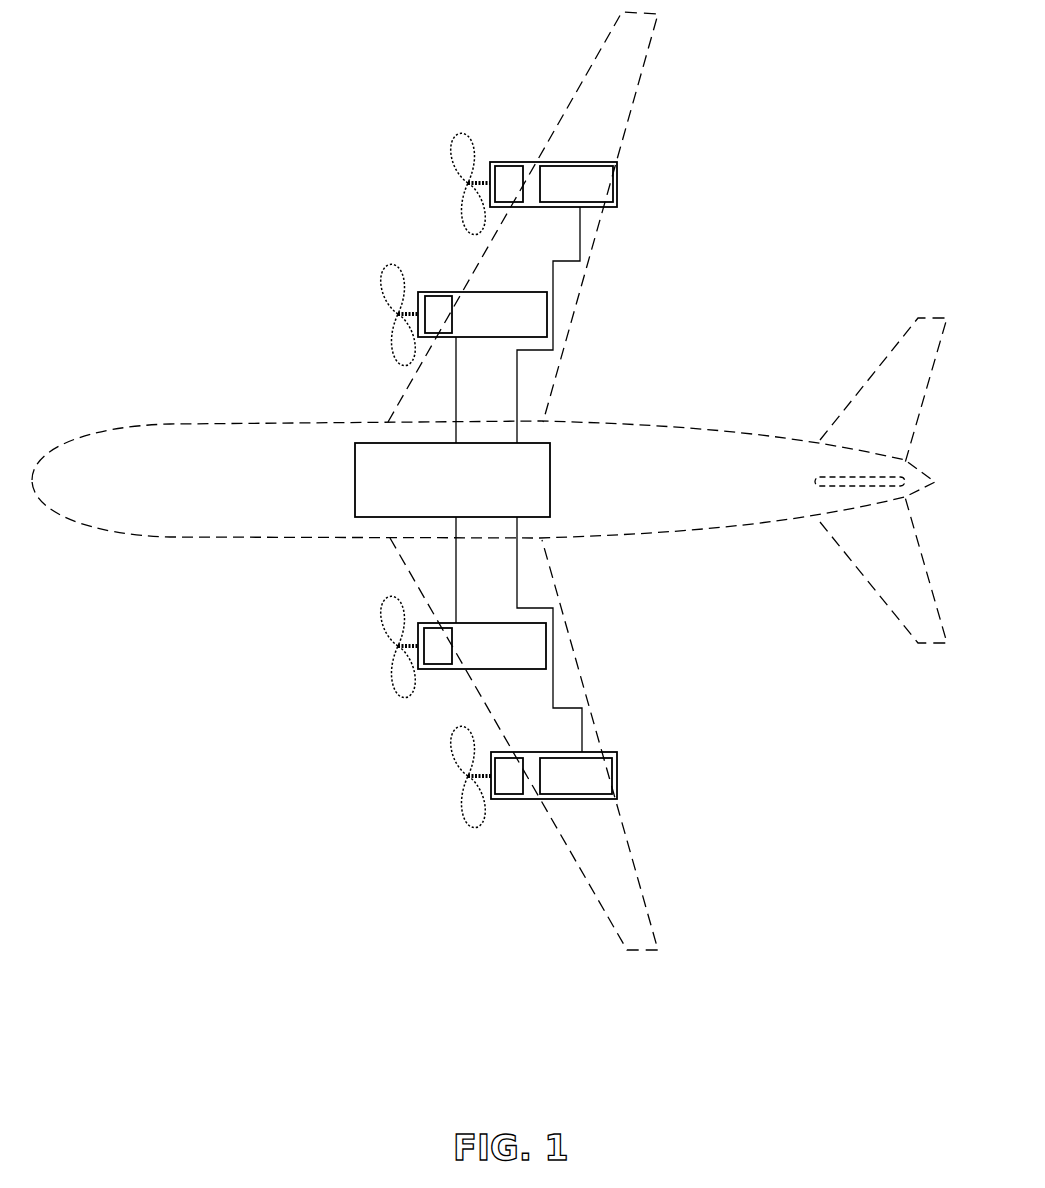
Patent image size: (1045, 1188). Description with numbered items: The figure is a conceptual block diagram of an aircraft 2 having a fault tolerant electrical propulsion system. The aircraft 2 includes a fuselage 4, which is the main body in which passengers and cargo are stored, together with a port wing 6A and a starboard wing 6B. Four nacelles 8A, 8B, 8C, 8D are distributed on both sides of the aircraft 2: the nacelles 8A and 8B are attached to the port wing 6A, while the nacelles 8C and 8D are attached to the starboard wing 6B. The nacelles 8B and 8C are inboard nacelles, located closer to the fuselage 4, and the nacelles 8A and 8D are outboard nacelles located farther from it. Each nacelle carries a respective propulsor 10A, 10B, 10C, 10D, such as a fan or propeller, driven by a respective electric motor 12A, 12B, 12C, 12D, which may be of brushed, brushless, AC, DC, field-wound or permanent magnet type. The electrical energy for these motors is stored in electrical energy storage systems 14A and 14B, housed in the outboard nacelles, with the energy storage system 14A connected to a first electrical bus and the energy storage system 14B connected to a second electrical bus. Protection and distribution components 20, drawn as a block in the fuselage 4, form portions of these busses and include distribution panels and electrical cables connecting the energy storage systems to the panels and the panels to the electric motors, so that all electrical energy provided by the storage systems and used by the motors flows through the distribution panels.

The aircraft 2 is at (845, 77).
The fuselage 4 is at (193, 437).
The port wing 6A is at (623, 860).
The starboard wing 6B is at (645, 55).
The nacelle 8A is at (425, 792).
The nacelle 8B is at (364, 664).
The nacelle 8C is at (366, 309).
The nacelle 8D is at (424, 179).
The propulsor 10A is at (468, 828).
The propulsor 10B is at (398, 697).
The propulsor 10C is at (398, 268).
The propulsor 10D is at (468, 137).
The electric motor 12A is at (510, 788).
The electric motor 12B is at (442, 662).
The electric motor 12C is at (432, 306).
The electric motor 12D is at (503, 178).
The electrical energy storage system 14A is at (605, 786).
The electrical energy storage system 14B is at (607, 190).
The protection and distribution components 20 is at (468, 479).